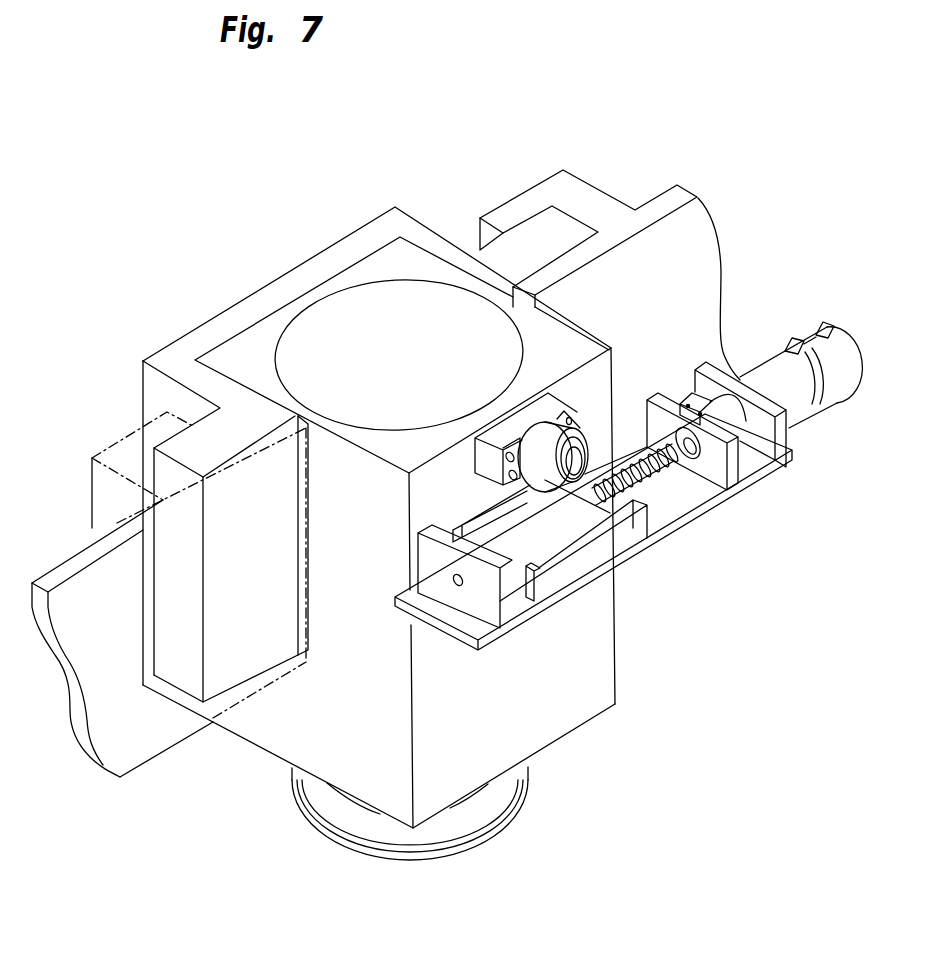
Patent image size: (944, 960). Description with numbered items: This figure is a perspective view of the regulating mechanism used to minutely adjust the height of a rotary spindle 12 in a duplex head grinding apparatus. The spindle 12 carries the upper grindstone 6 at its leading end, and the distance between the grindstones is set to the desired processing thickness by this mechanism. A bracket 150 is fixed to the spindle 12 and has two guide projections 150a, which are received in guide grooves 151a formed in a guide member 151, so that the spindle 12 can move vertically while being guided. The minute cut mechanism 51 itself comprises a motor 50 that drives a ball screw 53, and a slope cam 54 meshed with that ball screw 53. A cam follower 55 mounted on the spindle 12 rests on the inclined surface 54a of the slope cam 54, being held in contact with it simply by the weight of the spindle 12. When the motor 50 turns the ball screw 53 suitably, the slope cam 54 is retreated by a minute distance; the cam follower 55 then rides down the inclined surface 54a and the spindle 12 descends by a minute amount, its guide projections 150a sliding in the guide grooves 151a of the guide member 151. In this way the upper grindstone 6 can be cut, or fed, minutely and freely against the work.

The upper grindstone 6 is at (487, 826).
The rotary spindle 12 is at (313, 323).
The motor 50 is at (800, 400).
The minute cut mechanism 51 is at (646, 506).
The ball screw 53 is at (645, 490).
The slope cam 54 is at (522, 535).
The inclined surface 54a is at (540, 523).
The cam follower 55 is at (588, 432).
The bracket 150 is at (338, 254).
The guide projections 150a is at (207, 452).
The guide member 151 is at (681, 201).
The guide grooves 151a is at (167, 410).